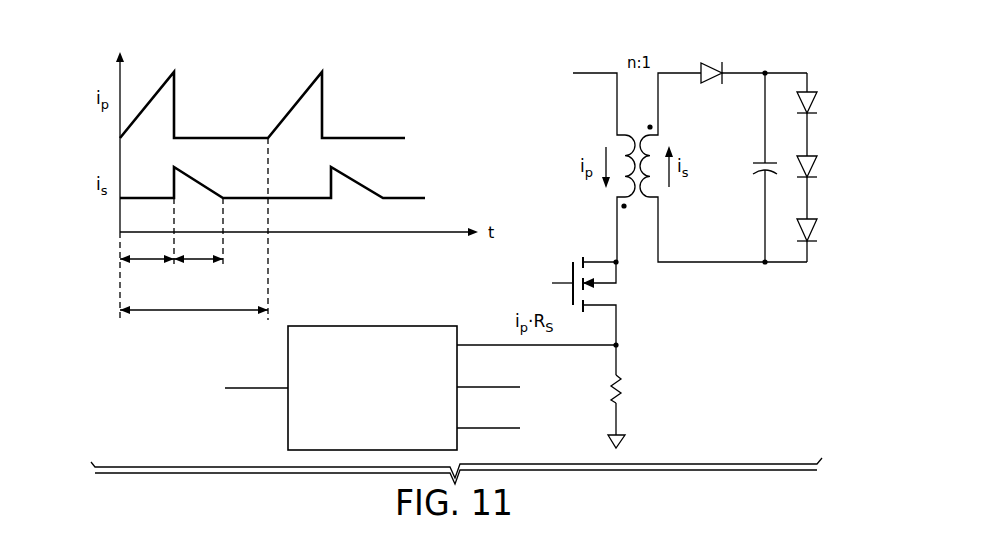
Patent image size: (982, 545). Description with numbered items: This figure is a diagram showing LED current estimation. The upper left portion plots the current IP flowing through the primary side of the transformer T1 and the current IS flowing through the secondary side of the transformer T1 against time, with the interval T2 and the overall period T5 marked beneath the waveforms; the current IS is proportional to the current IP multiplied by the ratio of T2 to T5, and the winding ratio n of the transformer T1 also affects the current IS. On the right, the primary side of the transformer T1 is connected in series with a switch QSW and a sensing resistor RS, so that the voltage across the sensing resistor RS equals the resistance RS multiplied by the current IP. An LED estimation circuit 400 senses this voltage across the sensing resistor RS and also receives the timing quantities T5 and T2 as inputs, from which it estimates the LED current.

The LED estimation circuit 400 is at (373, 326).
The switching transistor QSW is at (585, 286).
The sensing resistor RS is at (629, 390).
The transformer T1 is at (147, 271).
The time period T2 is at (198, 271).
The period T5 is at (194, 322).